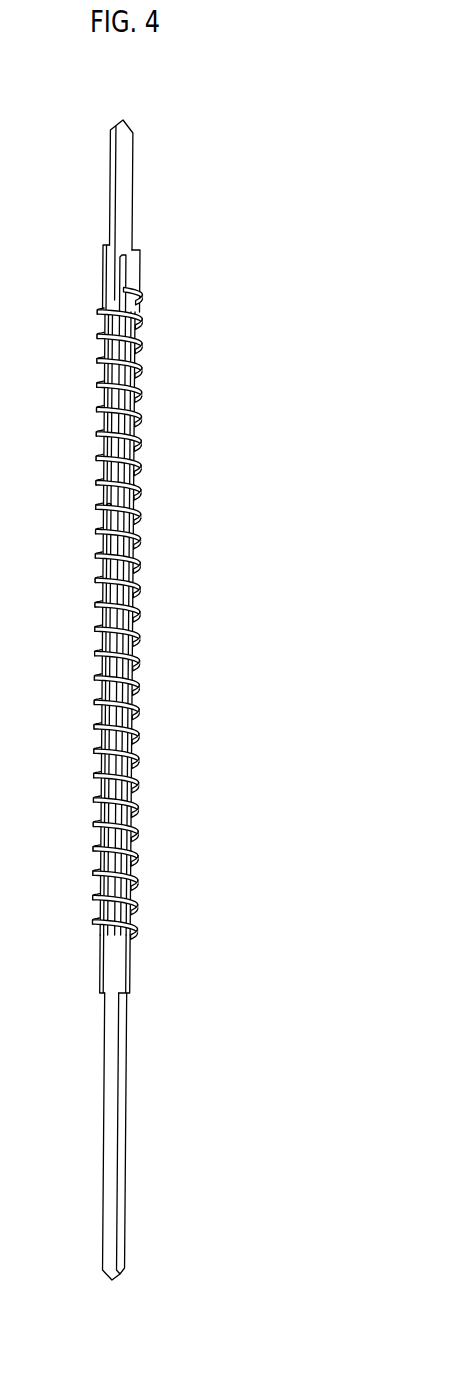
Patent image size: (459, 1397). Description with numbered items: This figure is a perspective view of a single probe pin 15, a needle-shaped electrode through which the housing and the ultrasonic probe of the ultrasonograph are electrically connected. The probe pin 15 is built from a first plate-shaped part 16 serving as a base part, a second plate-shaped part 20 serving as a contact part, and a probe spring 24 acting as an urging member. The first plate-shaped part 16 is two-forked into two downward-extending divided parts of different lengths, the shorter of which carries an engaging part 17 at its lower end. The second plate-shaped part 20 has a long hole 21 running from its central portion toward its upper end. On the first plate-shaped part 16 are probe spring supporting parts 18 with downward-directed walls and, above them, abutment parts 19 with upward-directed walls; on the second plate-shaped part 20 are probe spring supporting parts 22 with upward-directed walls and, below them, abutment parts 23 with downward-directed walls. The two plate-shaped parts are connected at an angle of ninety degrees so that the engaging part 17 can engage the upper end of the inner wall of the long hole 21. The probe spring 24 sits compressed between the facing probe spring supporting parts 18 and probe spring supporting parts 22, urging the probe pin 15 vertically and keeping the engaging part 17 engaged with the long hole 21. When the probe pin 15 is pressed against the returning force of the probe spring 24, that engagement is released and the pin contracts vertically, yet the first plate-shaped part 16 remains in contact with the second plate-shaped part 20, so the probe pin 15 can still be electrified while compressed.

The probe pin 15 is at (201, 126).
The first plate-shaped part 16 is at (140, 205).
The engaging part 17 is at (112, 498).
The probe spring supporting parts 18 is at (98, 310).
The abutment parts 19 is at (110, 247).
The second plate-shaped part 20 is at (136, 1061).
The long hole 21 is at (110, 625).
The probe spring supporting parts 22 is at (97, 938).
The abutment parts 23 is at (102, 998).
The probe spring 24 is at (148, 551).